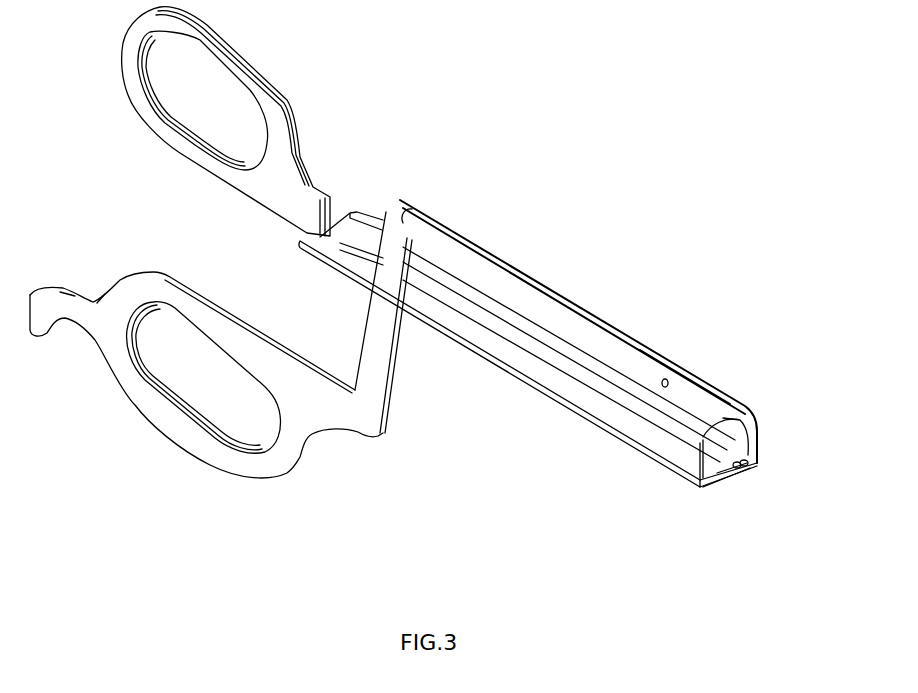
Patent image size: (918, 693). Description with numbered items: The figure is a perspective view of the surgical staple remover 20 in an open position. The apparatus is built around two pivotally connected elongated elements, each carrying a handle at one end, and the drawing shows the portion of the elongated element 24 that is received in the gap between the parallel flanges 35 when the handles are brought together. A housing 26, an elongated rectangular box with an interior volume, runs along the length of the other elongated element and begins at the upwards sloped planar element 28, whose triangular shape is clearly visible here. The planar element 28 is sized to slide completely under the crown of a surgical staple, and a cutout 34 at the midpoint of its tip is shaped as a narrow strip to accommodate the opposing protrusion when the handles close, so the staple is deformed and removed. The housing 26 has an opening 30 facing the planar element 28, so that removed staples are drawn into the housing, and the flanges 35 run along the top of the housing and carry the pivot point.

The surgical staple remover 20 is at (437, 276).
The elongated element 24 is at (710, 386).
The housing 26 is at (615, 413).
The upwards sloped planar element 28 is at (720, 490).
The opening 30 is at (717, 447).
The cutout 34 is at (747, 458).
The flange 35 is at (702, 380).